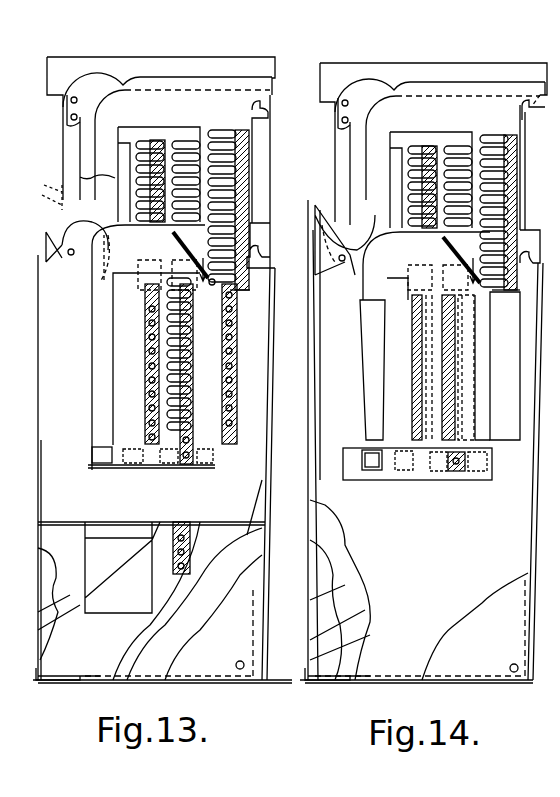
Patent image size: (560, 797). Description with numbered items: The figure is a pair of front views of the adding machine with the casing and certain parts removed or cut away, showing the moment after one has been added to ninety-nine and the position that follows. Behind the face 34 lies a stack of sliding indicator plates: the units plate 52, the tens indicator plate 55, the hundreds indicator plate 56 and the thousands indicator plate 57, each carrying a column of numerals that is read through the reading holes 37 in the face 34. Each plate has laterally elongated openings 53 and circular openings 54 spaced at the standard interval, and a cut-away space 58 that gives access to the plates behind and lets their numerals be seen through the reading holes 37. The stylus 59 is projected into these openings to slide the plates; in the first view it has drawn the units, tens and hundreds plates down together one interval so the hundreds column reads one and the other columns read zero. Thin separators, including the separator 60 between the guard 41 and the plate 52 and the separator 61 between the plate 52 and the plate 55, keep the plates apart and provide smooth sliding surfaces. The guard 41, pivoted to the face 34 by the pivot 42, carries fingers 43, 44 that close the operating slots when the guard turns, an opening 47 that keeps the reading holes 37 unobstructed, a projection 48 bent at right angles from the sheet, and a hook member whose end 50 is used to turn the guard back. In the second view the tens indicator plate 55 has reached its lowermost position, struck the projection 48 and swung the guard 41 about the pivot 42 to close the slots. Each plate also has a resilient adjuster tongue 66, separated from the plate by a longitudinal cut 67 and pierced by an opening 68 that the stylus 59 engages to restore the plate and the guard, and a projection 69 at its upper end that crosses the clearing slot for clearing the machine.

In FIG. 13, the face 34 is at (50, 596).
In FIG. 14, the face 34 is at (508, 637).
In FIG. 13, the reading holes 37 is at (120, 460).
In FIG. 14, the reading holes 37 is at (472, 471).
In FIG. 13, the guard 41 is at (38, 548).
In FIG. 14, the guard 41 is at (508, 557).
In FIG. 13, the pivot 42 is at (245, 672).
In FIG. 14, the pivot 42 is at (518, 672).
In FIG. 14, the finger 43 is at (392, 318).
In FIG. 14, the finger 44 is at (430, 332).
In FIG. 14, the opening 47 is at (355, 480).
In FIG. 13, the projection 48 is at (58, 686).
In FIG. 14, the projection 48 is at (322, 688).
In FIG. 13, the end 50 is at (50, 195).
In FIG. 14, the end 50 is at (322, 200).
In FIG. 13, the plate 52 is at (38, 452).
In FIG. 14, the plate 52 is at (530, 555).
In FIG. 13, the elongated openings 53 is at (240, 200).
In FIG. 14, the elongated openings 53 is at (455, 211).
In FIG. 13, the circular openings 54 is at (150, 422).
In FIG. 14, the circular openings 54 is at (530, 430).
In FIG. 14, the indicator plate 55 is at (368, 168).
In FIG. 13, the indicator plate 56 is at (240, 560).
In FIG. 14, the indicator plate 56 is at (322, 562).
In FIG. 13, the indicator plate 57 is at (118, 532).
In FIG. 13, the cut-away space 58 is at (112, 315).
In FIG. 14, the cut-away space 58 is at (551, 528).
In FIG. 13, the stylus 59 is at (172, 236).
In FIG. 14, the stylus 59 is at (443, 245).
In FIG. 13, the separator 60 is at (38, 540).
In FIG. 14, the separator 60 is at (310, 502).
In FIG. 13, the separator 61 is at (60, 620).
In FIG. 13, the adjuster tongue 66 is at (100, 78).
In FIG. 14, the adjuster tongue 66 is at (370, 84).
In FIG. 14, the longitudinal cut 67 is at (520, 390).
In FIG. 13, the opening 68 is at (73, 97).
In FIG. 14, the opening 68 is at (344, 100).
In FIG. 13, the projections 69 is at (262, 118).
In FIG. 14, the projections 69 is at (536, 110).